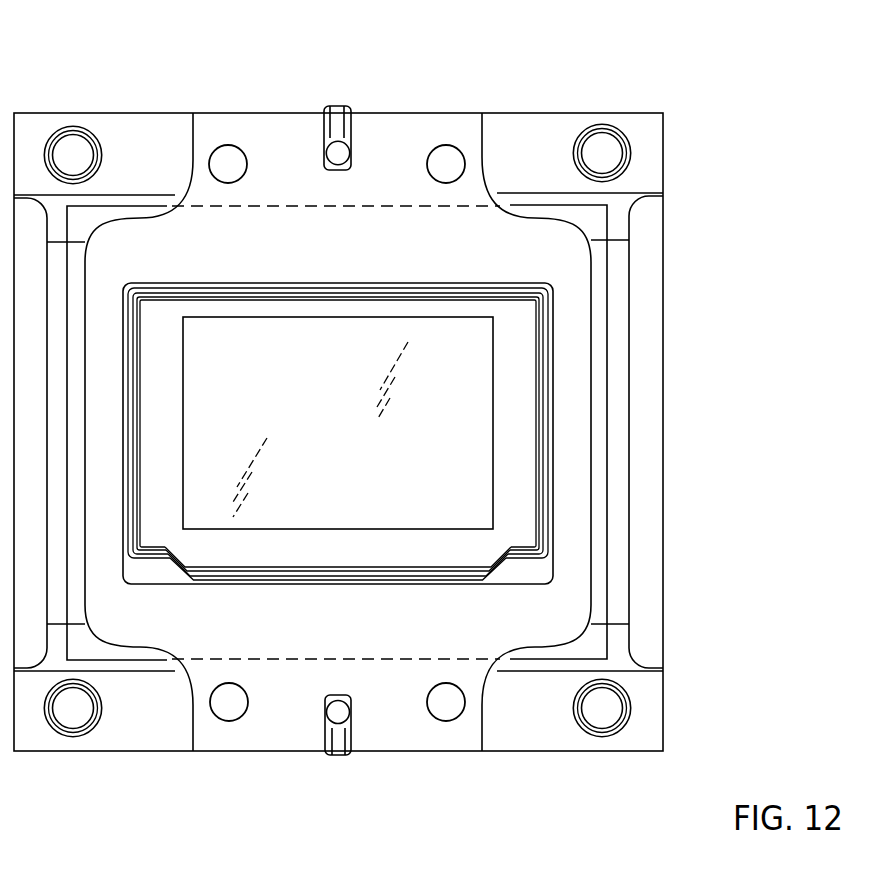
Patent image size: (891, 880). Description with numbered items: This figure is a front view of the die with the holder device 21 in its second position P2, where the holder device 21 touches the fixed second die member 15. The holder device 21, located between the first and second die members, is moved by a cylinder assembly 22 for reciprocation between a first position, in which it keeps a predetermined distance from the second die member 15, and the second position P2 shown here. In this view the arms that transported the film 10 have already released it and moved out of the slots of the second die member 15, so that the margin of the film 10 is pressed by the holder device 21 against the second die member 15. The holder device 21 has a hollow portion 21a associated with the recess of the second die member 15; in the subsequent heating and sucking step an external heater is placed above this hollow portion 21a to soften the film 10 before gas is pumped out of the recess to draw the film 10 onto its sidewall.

The second position P2 is at (548, 102).
The second die member 15 is at (664, 141).
The cylinder assembly 22 is at (340, 103).
The holder device 21 is at (594, 446).
The film 10 is at (469, 353).
The hollow portion 21a is at (555, 562).